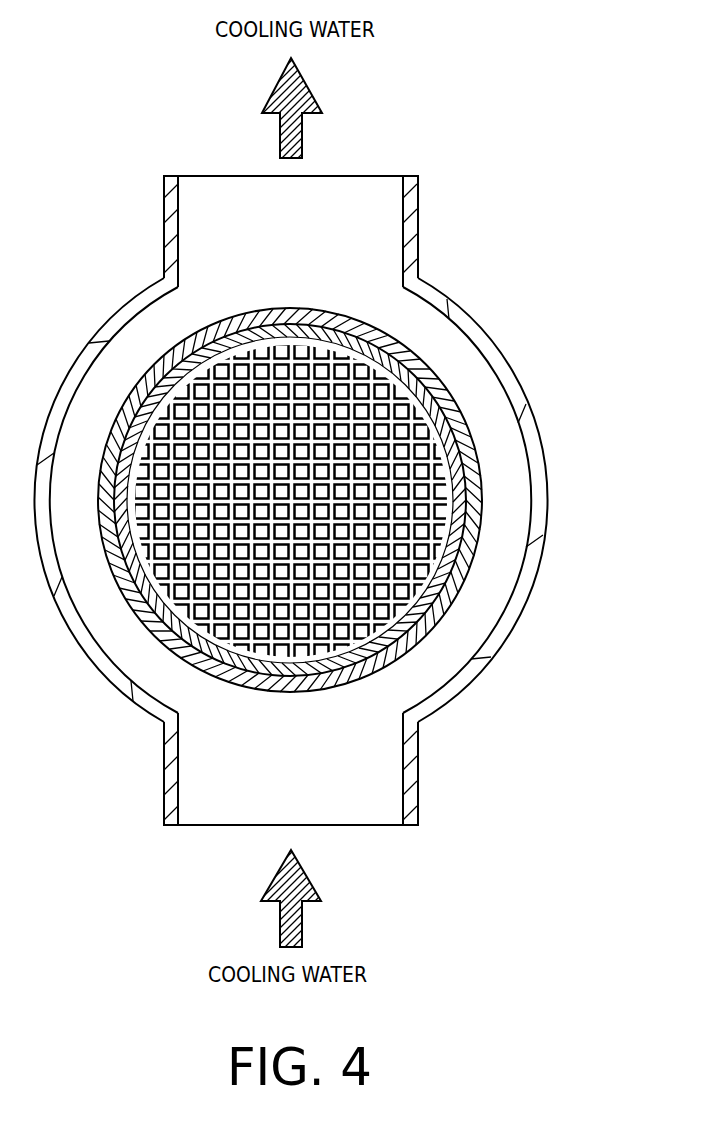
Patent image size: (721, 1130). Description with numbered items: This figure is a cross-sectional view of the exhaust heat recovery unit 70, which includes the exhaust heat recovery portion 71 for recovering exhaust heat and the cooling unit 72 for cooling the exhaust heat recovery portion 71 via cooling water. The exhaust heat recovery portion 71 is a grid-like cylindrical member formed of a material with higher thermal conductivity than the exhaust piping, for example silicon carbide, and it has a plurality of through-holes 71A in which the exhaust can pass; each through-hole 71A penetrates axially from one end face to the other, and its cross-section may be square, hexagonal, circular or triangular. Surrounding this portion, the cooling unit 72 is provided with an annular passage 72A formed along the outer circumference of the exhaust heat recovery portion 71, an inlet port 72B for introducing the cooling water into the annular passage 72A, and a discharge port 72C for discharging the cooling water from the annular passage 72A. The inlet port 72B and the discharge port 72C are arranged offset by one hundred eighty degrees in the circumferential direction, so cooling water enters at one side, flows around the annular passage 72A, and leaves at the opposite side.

The exhaust heat recovery unit 70 is at (521, 83).
The exhaust heat recovery portion 71 is at (405, 470).
The through-hole 71A is at (412, 511).
The cooling unit 72 is at (418, 214).
The annular passage 72A is at (485, 382).
The inlet port 72B is at (378, 826).
The discharge port 72C is at (382, 176).